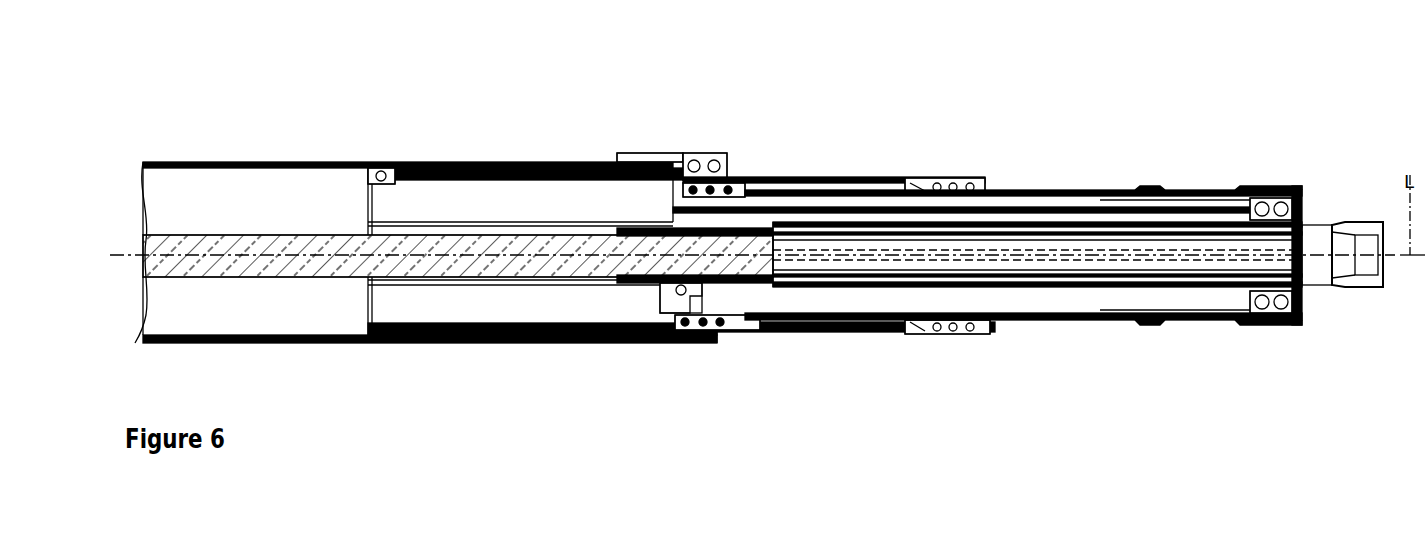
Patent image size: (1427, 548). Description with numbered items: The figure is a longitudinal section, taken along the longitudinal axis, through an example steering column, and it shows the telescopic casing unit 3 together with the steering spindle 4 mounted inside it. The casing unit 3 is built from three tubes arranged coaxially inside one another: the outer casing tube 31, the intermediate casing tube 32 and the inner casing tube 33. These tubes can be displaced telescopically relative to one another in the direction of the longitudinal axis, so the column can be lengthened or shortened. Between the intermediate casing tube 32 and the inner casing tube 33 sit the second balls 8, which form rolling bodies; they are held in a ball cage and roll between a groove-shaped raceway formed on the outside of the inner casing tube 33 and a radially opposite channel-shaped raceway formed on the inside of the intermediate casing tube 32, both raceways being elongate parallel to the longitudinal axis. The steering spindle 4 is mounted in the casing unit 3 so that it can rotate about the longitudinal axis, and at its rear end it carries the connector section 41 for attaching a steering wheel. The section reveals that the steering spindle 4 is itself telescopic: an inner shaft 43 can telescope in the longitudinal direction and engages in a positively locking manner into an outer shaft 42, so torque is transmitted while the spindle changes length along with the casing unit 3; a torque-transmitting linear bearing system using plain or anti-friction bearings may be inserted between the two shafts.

The casing unit 3 is at (524, 86).
The outer casing tube 31 is at (242, 165).
The intermediate casing tube 32 is at (820, 177).
The inner casing tube 33 is at (1072, 190).
The steering spindle 4 is at (1192, 228).
The connector section 41 is at (1368, 224).
The outer shaft 42 is at (1150, 222).
The inner shaft 43 is at (680, 228).
The second balls 8 is at (968, 185).